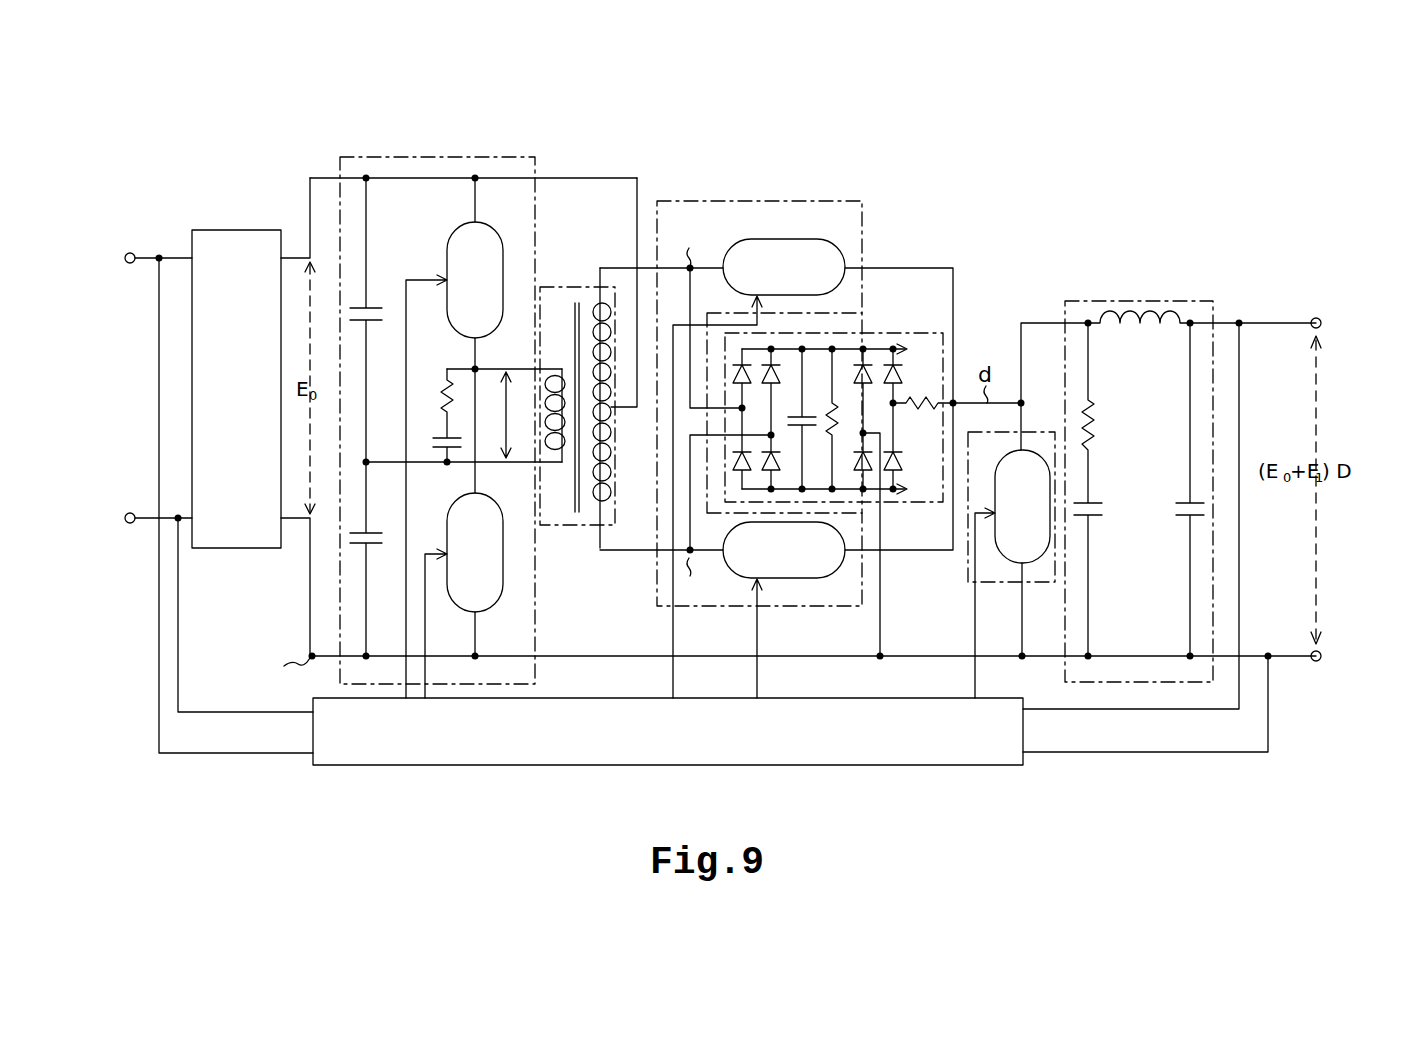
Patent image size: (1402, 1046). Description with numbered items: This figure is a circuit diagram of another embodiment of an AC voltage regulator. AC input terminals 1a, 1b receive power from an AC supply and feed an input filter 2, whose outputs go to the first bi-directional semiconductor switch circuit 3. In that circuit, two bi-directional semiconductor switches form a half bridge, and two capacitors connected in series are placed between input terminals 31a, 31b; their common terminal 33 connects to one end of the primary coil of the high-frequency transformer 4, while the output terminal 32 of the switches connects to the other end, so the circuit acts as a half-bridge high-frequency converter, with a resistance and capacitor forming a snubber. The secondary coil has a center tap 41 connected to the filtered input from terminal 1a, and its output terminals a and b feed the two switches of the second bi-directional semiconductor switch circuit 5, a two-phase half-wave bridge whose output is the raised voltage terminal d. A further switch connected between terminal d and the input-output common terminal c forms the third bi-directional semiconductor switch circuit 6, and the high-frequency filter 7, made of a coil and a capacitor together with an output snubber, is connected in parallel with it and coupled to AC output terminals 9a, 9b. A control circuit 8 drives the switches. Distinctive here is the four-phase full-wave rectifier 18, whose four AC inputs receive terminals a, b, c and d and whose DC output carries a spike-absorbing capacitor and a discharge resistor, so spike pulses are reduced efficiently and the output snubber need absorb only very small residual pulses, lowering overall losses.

The AC input terminal 1a is at (125, 258).
The AC input terminal 1b is at (125, 518).
The input filter 2 is at (230, 230).
The first bi-directional semiconductor switch circuit 3 is at (778, 401).
The input terminal 31a is at (364, 176).
The input terminal 31b is at (330, 653).
The output terminal 32 is at (474, 368).
The common terminal 33 is at (366, 462).
The high-frequency transformer 4 is at (596, 363).
The center tap 41 is at (636, 410).
The second bi-directional semiconductor switch circuit 5 is at (750, 200).
The four-phase full-wave rectifier 18 is at (908, 334).
The third bi-directional semiconductor switch circuit 6 is at (987, 584).
The high-frequency filter 7 is at (1194, 301).
The control circuit 8 is at (705, 766).
The AC output terminal 9a is at (1321, 323).
The AC output terminal 9b is at (1321, 656).